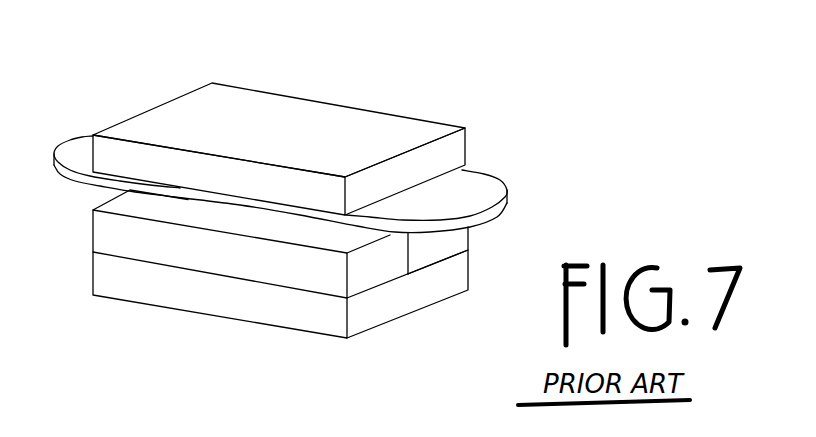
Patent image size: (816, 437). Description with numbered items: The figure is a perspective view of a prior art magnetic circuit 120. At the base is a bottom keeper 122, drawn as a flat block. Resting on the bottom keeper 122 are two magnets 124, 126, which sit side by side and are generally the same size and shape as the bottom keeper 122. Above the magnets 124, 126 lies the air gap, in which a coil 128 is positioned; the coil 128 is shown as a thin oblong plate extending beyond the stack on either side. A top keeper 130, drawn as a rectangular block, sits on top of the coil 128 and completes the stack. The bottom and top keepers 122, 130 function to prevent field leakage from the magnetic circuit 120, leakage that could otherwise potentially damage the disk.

The magnetic circuit 120 is at (145, 94).
The bottom keeper 122 is at (321, 323).
The magnet 124 is at (449, 242).
The magnet 126 is at (392, 262).
The coil 128 is at (470, 183).
The top keeper 130 is at (372, 122).